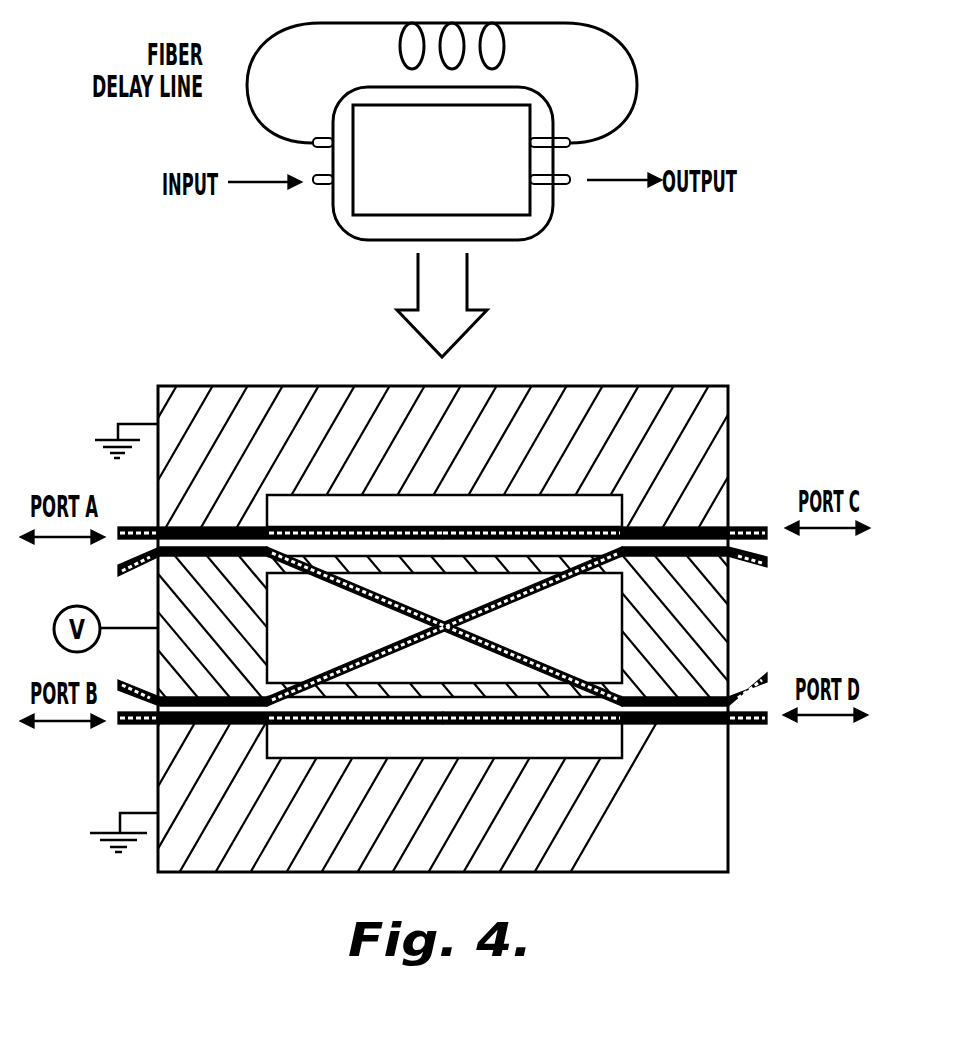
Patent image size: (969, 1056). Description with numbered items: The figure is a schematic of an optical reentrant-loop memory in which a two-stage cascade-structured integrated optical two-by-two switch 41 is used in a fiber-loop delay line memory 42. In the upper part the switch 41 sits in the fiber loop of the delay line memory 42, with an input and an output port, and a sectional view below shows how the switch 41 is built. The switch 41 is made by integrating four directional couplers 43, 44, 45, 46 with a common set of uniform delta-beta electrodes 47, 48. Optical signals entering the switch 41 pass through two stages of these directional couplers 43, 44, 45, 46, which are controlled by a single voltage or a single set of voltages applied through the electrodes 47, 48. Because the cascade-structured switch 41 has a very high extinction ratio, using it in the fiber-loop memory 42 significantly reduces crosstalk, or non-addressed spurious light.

The cascade-structured integrated optical 2×2 switch 41 is at (510, 108).
The fiber-loop delay line memory 42 is at (655, 90).
The directional coupler 43 is at (193, 525).
The directional coupler 44 is at (695, 518).
The directional coupler 45 is at (215, 720).
The directional coupler 46 is at (694, 718).
The uniform delta-beta electrode 47 is at (490, 451).
The uniform delta-beta electrode 48 is at (714, 620).